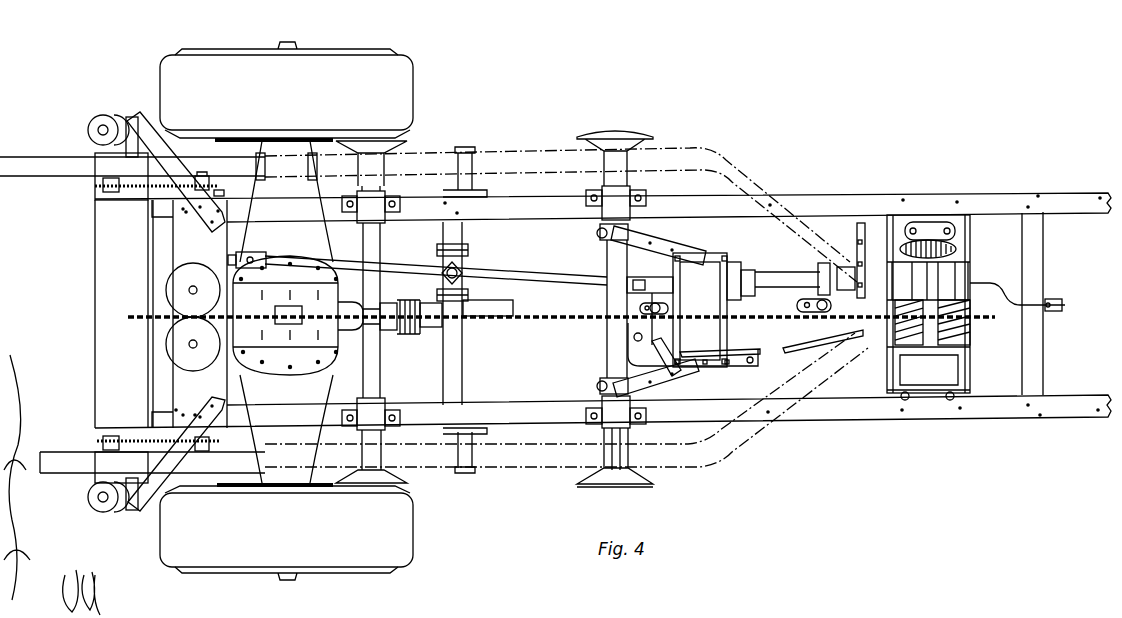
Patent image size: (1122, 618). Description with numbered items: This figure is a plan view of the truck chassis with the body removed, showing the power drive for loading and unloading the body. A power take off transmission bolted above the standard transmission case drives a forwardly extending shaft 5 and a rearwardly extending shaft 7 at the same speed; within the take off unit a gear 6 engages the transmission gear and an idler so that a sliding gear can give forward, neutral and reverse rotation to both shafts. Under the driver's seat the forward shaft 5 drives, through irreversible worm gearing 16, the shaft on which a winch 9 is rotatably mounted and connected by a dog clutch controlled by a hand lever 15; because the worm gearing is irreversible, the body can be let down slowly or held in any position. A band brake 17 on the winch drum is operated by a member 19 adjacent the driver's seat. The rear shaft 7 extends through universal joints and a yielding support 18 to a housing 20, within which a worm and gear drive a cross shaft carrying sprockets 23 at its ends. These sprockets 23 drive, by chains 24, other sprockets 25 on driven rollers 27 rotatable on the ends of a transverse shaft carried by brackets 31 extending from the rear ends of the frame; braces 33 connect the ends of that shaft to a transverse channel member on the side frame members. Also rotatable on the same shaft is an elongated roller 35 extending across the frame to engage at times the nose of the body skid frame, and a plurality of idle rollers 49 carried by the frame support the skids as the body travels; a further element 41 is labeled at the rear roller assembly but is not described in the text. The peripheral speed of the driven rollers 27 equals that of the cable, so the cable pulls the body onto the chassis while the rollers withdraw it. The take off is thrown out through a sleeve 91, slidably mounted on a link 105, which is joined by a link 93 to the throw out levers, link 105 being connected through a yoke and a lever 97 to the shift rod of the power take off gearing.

The forwardly extending shaft 5 is at (793, 282).
The gear 6 is at (661, 133).
The rearwardly extending shaft 7 is at (647, 280).
The winch 9 is at (953, 345).
The hand lever 15 is at (75, 268).
The irreversible worm gearing 16 is at (134, 369).
The band brake 17 is at (950, 285).
The yielding support 18 is at (462, 270).
The brake operating member 19 is at (1052, 303).
The housing 20 is at (190, 205).
The sprockets 23 is at (202, 176).
The chains 24 is at (132, 147).
The sprockets 25 is at (100, 180).
The driven rollers 27 is at (105, 165).
The brackets 31 is at (107, 194).
The braces 33 is at (150, 200).
The elongated roller 35 is at (107, 363).
The rear roller 41 is at (92, 488).
The idle rollers 49 is at (373, 163).
The sleeve 91 is at (694, 358).
The link 93 is at (838, 343).
The lever 97 is at (657, 347).
The link 105 is at (765, 350).